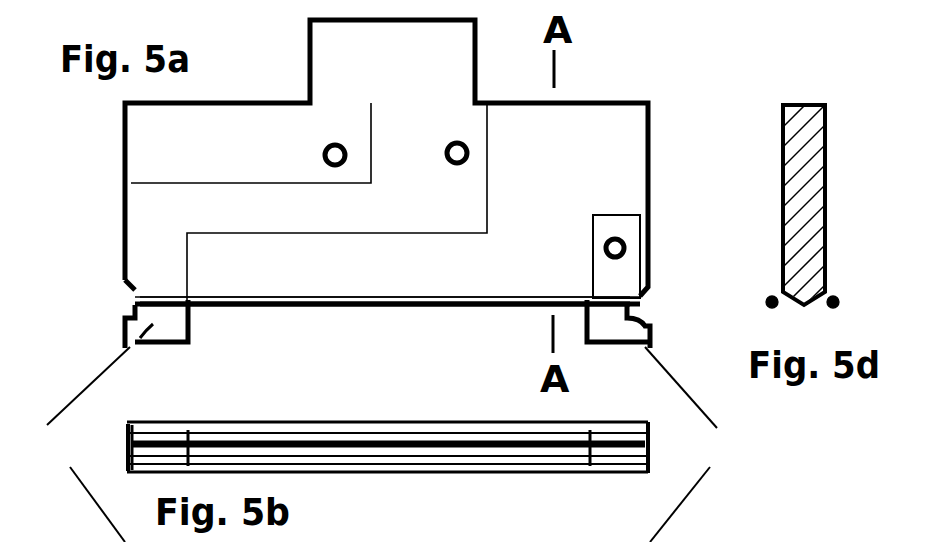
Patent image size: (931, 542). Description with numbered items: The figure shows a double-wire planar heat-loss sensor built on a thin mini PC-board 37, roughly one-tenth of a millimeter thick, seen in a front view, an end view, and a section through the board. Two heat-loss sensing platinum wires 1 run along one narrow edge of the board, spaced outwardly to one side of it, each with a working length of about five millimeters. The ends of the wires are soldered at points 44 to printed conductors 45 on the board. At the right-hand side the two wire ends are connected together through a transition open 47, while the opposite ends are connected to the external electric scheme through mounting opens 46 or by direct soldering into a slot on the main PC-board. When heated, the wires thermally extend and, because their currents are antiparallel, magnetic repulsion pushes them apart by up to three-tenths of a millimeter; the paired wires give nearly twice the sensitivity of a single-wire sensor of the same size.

In FIG. 5a, the heat-loss sensing platinum wires 1 is at (390, 304).
In FIG. 5b, the heat-loss sensing platinum wires 1 is at (415, 427).
In FIG. 5d, the heat-loss sensing platinum wires 1 is at (770, 295).
In FIG. 5a, the mini PC-board 37 is at (367, 272).
In FIG. 5b, the mini PC-board 37 is at (367, 445).
In FIG. 5d, the mini PC-board 37 is at (808, 185).
In FIG. 5b, the soldering points 44 is at (127, 430).
In FIG. 5a, the printed conductors 45 is at (613, 228).
In FIG. 5a, the mounting opens 46 is at (446, 146).
In FIG. 5a, the transition open 47 is at (625, 248).